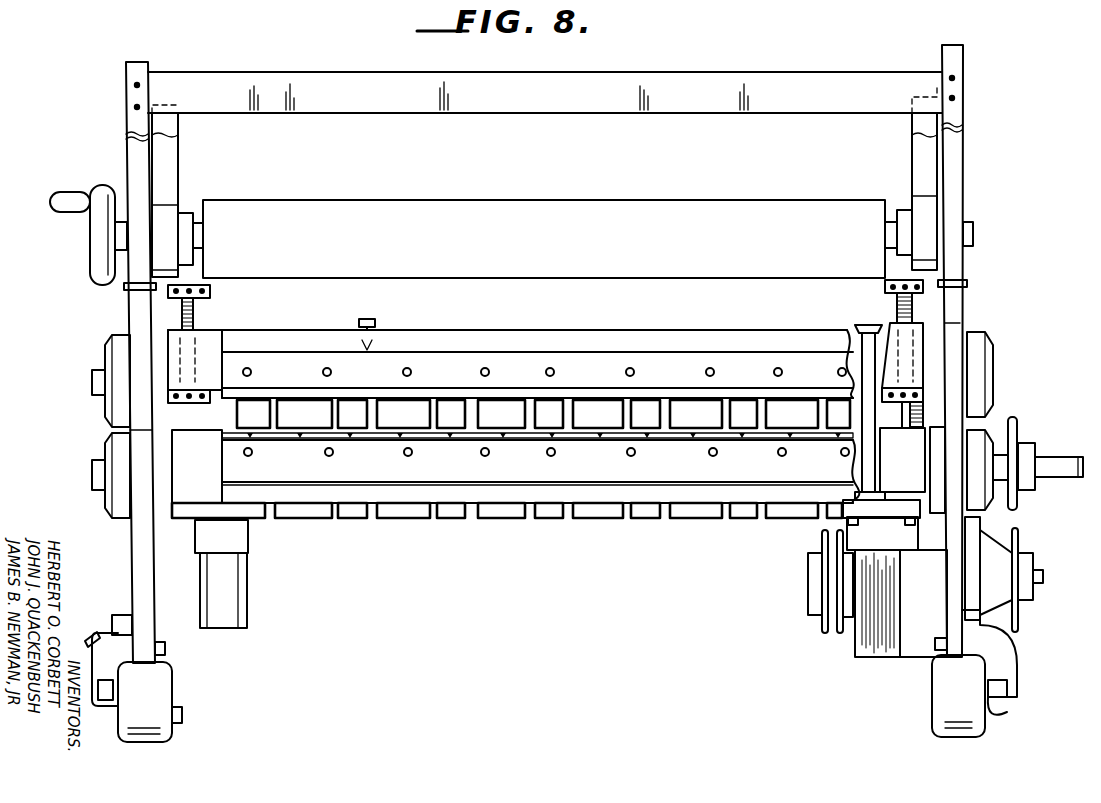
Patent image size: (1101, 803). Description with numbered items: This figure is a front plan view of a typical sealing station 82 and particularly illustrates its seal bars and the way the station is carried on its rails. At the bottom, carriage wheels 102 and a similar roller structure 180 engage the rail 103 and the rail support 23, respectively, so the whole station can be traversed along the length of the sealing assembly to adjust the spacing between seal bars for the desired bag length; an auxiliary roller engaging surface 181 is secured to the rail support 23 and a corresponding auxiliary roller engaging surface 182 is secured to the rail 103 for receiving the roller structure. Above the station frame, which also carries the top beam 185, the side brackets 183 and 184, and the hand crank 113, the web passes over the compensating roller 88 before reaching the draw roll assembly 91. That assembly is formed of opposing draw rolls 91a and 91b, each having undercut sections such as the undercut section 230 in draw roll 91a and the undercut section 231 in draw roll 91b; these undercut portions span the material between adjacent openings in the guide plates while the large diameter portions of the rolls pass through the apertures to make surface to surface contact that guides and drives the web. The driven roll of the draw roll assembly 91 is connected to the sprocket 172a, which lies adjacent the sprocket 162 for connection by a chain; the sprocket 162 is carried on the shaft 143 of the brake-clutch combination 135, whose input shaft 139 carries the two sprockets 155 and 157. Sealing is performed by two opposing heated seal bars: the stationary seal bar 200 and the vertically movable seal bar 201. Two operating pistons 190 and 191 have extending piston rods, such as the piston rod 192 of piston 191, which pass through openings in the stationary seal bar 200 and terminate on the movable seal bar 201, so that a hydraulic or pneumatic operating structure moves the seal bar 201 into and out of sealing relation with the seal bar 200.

The top cross beam 185 is at (575, 110).
The left bearing bracket 183 is at (168, 222).
The right bearing bracket 184 is at (925, 208).
The compensating roller 88 is at (493, 207).
The sealing station 82 is at (996, 253).
The hand crank 113 is at (95, 262).
The movable seal bar 201 is at (511, 370).
The undercut section 231 is at (314, 383).
The draw roll 91b is at (648, 410).
The draw roll assembly 91 is at (515, 503).
The stationary seal bar 200 is at (515, 508).
The undercut section 230 is at (271, 520).
The draw roll 91a is at (596, 524).
The piston rod 192 is at (875, 463).
The sprocket 172a is at (1014, 424).
The sprocket 162 is at (1020, 535).
The shaft 143 is at (1043, 577).
The carriage wheel 102 is at (1000, 658).
The auxiliary roller engaging surface 182 is at (998, 702).
The rail 103 is at (930, 710).
The operating piston 191 is at (896, 605).
The brake-clutch combination 135 is at (898, 664).
The input shaft 139 is at (812, 580).
The sprocket 155 is at (823, 625).
The sprocket 157 is at (838, 632).
The operating piston 190 is at (200, 540).
The rail support 23 is at (160, 690).
The auxiliary roller engaging surface 181 is at (122, 669).
The roller structure 180 is at (112, 655).